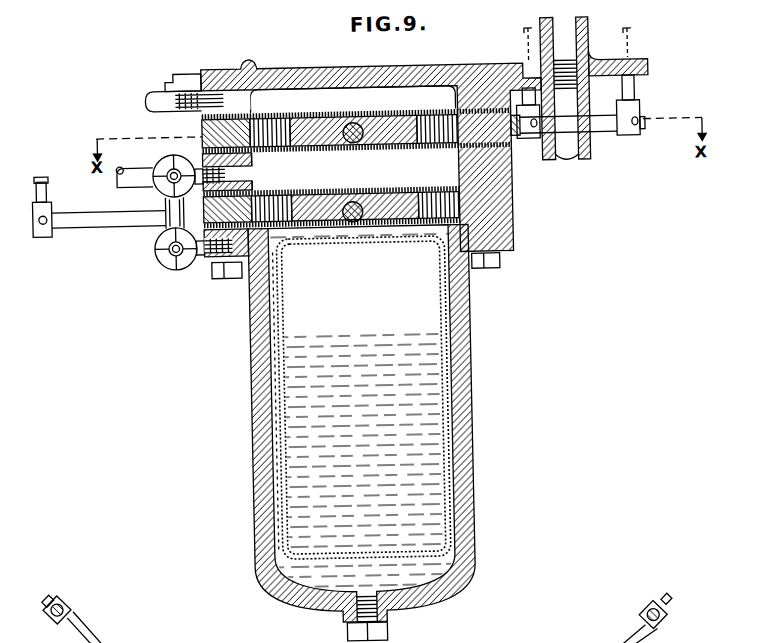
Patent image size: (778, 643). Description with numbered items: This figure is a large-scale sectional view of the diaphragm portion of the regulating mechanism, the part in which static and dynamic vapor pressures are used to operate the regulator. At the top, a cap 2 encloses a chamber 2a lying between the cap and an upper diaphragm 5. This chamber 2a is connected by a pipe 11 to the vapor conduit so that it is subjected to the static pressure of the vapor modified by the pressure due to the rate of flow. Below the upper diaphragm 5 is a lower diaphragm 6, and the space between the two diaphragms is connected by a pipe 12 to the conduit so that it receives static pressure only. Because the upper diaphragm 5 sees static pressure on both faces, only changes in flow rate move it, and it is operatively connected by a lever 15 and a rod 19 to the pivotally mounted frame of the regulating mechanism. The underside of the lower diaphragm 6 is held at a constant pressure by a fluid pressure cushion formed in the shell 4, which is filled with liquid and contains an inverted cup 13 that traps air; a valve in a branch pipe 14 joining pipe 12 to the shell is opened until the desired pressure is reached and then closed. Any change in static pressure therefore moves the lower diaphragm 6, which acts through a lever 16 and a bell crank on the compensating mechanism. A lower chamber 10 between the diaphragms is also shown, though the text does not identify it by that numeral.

The cap 2 is at (412, 68).
The chamber 2a is at (277, 105).
The shell 4 is at (463, 378).
The upper diaphragm 5 is at (323, 127).
The lower diaphragm 6 is at (395, 203).
The lower chamber 10 is at (282, 190).
The pipe 11 is at (160, 87).
The pipe 12 is at (138, 168).
The inverted cup 13 is at (438, 453).
The branch pipe 14 is at (172, 208).
The lever 15 is at (551, 137).
The lever 16 is at (85, 220).
The rod 19 is at (532, 44).